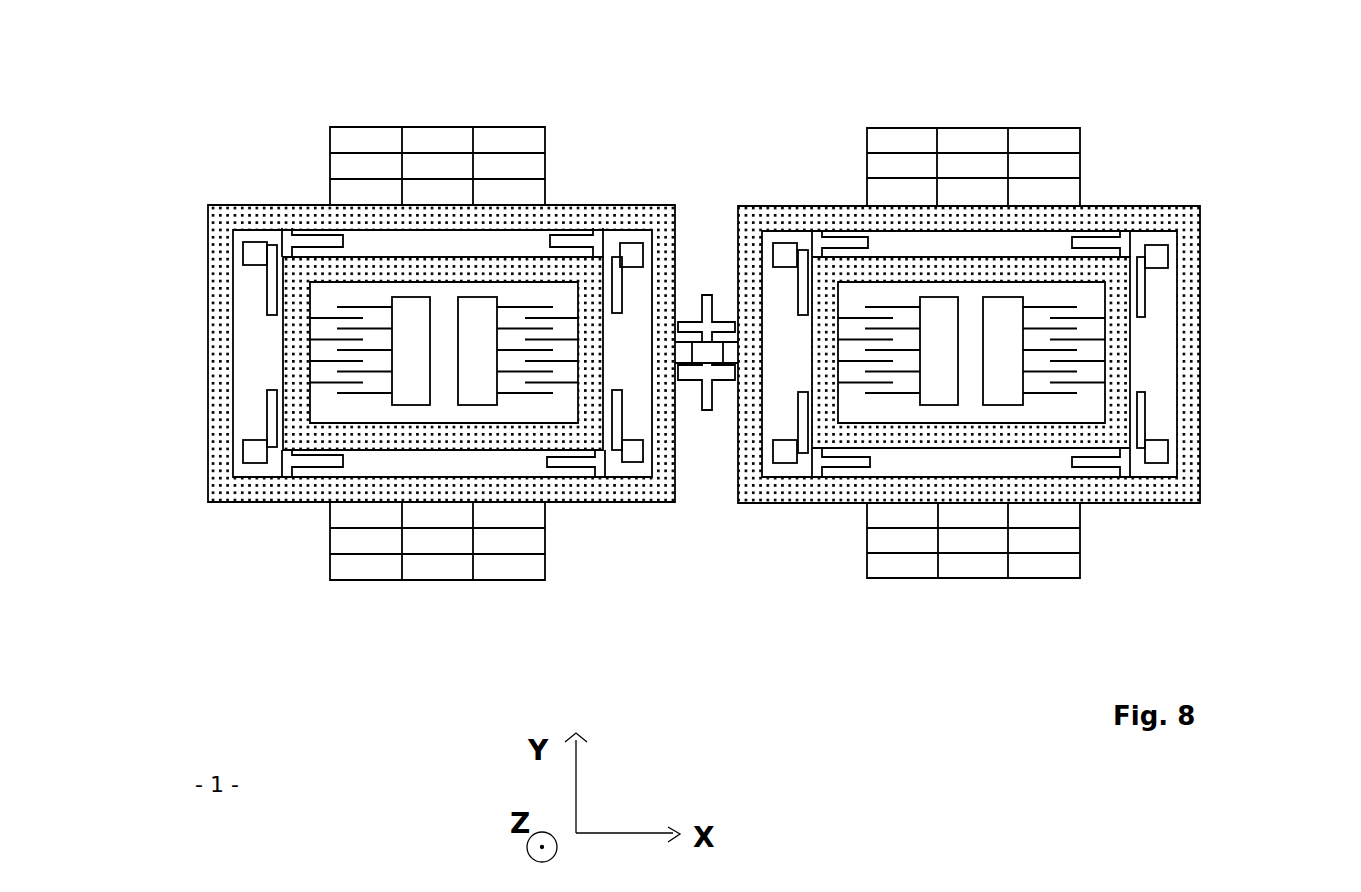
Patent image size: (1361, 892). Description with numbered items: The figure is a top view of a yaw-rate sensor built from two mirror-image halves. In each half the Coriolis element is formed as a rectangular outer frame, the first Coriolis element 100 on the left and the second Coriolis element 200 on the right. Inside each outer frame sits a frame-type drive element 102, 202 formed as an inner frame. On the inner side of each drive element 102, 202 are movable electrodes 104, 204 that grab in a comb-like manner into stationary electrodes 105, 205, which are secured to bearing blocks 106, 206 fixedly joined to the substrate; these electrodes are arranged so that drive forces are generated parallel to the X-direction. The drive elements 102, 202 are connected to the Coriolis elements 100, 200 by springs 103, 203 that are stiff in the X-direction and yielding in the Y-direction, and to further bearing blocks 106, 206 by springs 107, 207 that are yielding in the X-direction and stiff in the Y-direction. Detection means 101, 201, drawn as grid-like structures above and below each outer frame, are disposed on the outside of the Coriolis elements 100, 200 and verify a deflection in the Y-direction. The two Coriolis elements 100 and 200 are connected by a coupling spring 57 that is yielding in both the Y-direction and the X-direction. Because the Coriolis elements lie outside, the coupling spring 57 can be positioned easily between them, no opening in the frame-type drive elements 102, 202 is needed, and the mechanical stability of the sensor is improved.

The first Coriolis element 100 is at (218, 370).
The detection means 101 is at (358, 152).
The drive element 102 is at (285, 330).
The spring 103 is at (318, 235).
The movable electrode 104 is at (565, 318).
The stationary electrode 105 is at (527, 307).
The bearing block 106 is at (483, 300).
The spring 107 is at (273, 262).
The coupling spring 57 is at (703, 410).
The second Coriolis element 200 is at (752, 252).
The detection means 201 is at (937, 158).
The drive element 202 is at (1120, 387).
The spring 203 is at (855, 237).
The movable electrode 204 is at (1090, 318).
The stationary electrode 205 is at (1052, 307).
The bearing block 206 is at (995, 320).
The spring 207 is at (1143, 427).